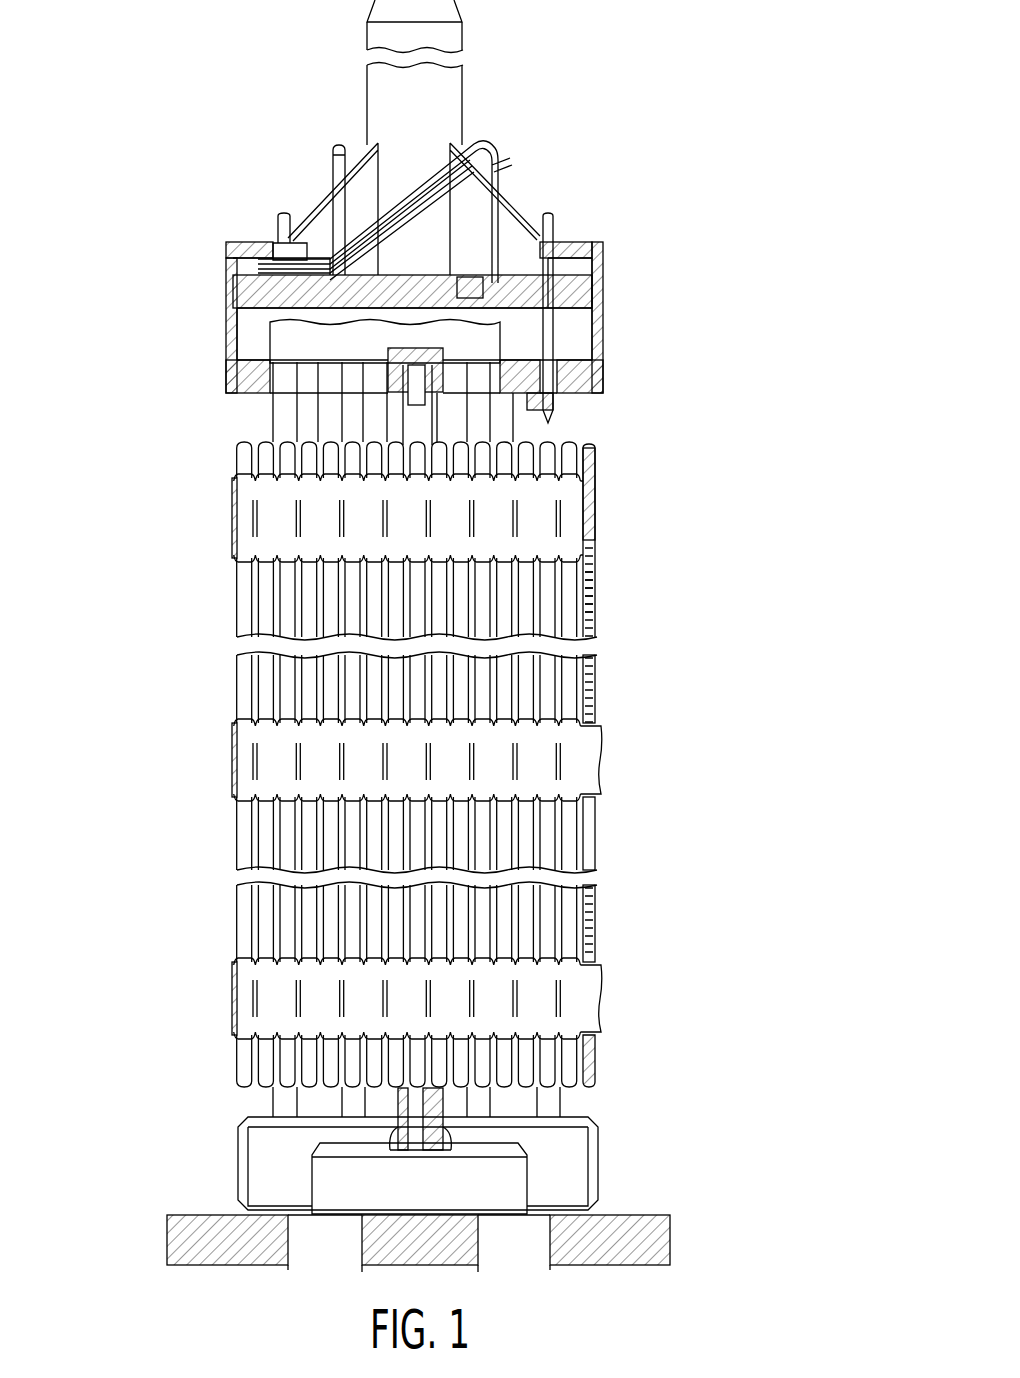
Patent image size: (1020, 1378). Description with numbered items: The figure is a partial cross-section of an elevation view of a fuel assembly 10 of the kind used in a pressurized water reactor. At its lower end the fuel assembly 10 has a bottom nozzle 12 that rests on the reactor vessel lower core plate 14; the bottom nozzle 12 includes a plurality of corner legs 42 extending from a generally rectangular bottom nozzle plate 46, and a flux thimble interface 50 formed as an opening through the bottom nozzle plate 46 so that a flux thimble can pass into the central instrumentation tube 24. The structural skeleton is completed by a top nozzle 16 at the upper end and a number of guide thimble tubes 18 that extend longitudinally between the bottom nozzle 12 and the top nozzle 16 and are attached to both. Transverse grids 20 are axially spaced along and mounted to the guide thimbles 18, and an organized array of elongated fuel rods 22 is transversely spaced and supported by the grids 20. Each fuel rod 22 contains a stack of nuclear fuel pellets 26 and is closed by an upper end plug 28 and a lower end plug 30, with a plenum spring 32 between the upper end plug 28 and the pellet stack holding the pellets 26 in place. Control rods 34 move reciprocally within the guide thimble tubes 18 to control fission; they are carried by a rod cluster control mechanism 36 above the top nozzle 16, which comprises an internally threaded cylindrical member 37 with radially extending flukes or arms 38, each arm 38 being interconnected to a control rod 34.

The fuel assembly 10 is at (465, 636).
The bottom nozzle 12 is at (476, 1150).
The reactor vessel lower core plate 14 is at (665, 1215).
The top nozzle 16 is at (603, 298).
The guide thimble tubes 18 is at (268, 418).
The transverse grids 20 is at (237, 515).
The fuel rods 22 is at (237, 695).
The instrumentation tube 24 is at (395, 1173).
The nuclear fuel pellets 26 is at (588, 625).
The upper end plug 28 is at (597, 443).
The lower end plug 30 is at (597, 1085).
The plenum spring 32 is at (597, 508).
The control rods 34 is at (560, 355).
The rod cluster control mechanism 36 is at (486, 142).
The internally threaded cylindrical member 37 is at (465, 88).
The radially extending flukes or arms 38 is at (333, 198).
The corner legs 42 is at (238, 1170).
The bottom nozzle plate 46 is at (338, 1145).
The flux thimble interface 50 is at (422, 1142).